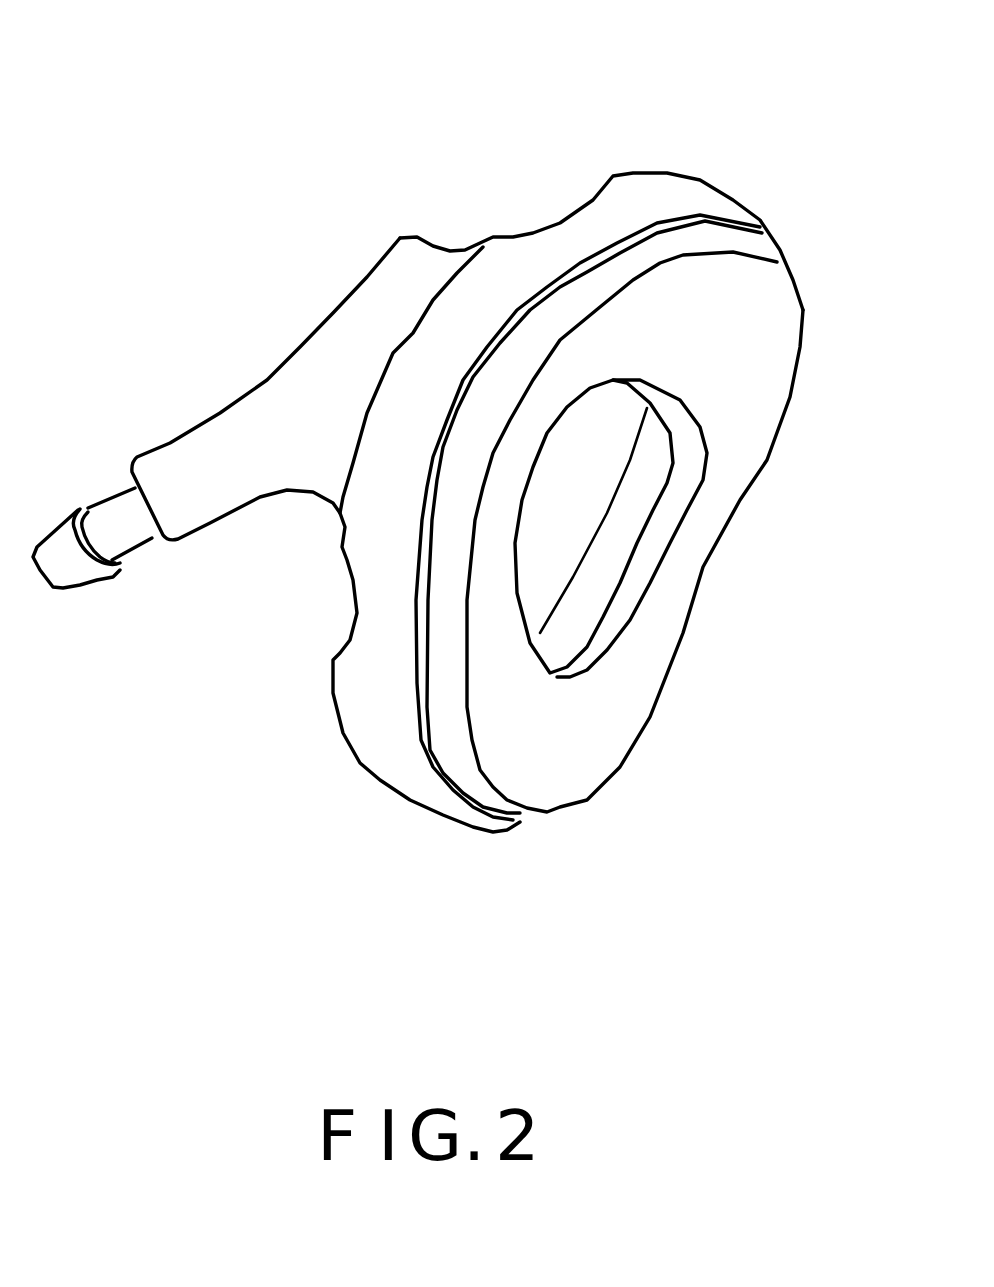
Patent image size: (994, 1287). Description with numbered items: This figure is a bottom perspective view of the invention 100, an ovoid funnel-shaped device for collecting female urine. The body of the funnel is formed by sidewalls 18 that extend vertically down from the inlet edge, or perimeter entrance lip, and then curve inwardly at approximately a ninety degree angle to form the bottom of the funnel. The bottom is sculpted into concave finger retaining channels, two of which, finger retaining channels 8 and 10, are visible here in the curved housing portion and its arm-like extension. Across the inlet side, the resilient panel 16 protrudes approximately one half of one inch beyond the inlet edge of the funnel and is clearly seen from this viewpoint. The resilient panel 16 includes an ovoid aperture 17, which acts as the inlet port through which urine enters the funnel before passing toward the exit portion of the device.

The invention 100 is at (73, 297).
The finger retaining channel 10 is at (548, 215).
The finger retaining channel 8 is at (323, 627).
The sidewalls 18 is at (680, 199).
The resilient panel 16 is at (760, 403).
The ovoid aperture 17 is at (567, 508).